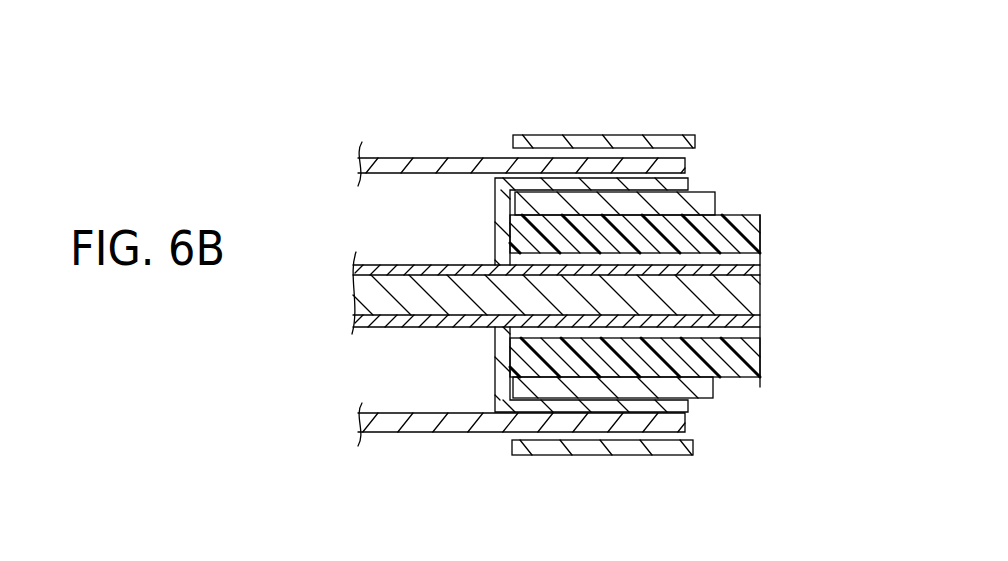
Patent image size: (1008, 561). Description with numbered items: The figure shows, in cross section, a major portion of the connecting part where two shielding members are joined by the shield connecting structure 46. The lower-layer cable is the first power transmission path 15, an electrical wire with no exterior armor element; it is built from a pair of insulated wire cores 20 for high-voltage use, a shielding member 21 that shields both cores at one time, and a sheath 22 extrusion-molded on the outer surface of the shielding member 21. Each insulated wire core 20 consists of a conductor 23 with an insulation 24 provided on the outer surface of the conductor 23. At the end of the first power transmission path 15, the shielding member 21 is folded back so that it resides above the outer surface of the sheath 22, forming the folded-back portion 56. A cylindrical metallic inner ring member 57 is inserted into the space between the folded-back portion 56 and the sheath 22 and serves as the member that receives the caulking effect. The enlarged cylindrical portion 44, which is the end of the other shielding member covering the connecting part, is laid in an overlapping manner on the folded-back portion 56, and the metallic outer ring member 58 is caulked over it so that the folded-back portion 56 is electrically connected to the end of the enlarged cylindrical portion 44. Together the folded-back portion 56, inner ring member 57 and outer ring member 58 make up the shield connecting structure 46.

The first power transmission path 15 is at (742, 209).
The insulated wire core 20 is at (265, 211).
The shielding member 21 is at (762, 355).
The sheath 22 is at (740, 378).
The conductor 23 is at (372, 298).
The insulation 24 is at (375, 265).
The enlarged cylindrical portion 44 is at (437, 158).
The shield connecting structure 46 is at (583, 108).
The folded-back portion 56 is at (658, 405).
The inner ring member 57 is at (698, 195).
The outer ring member 58 is at (650, 134).